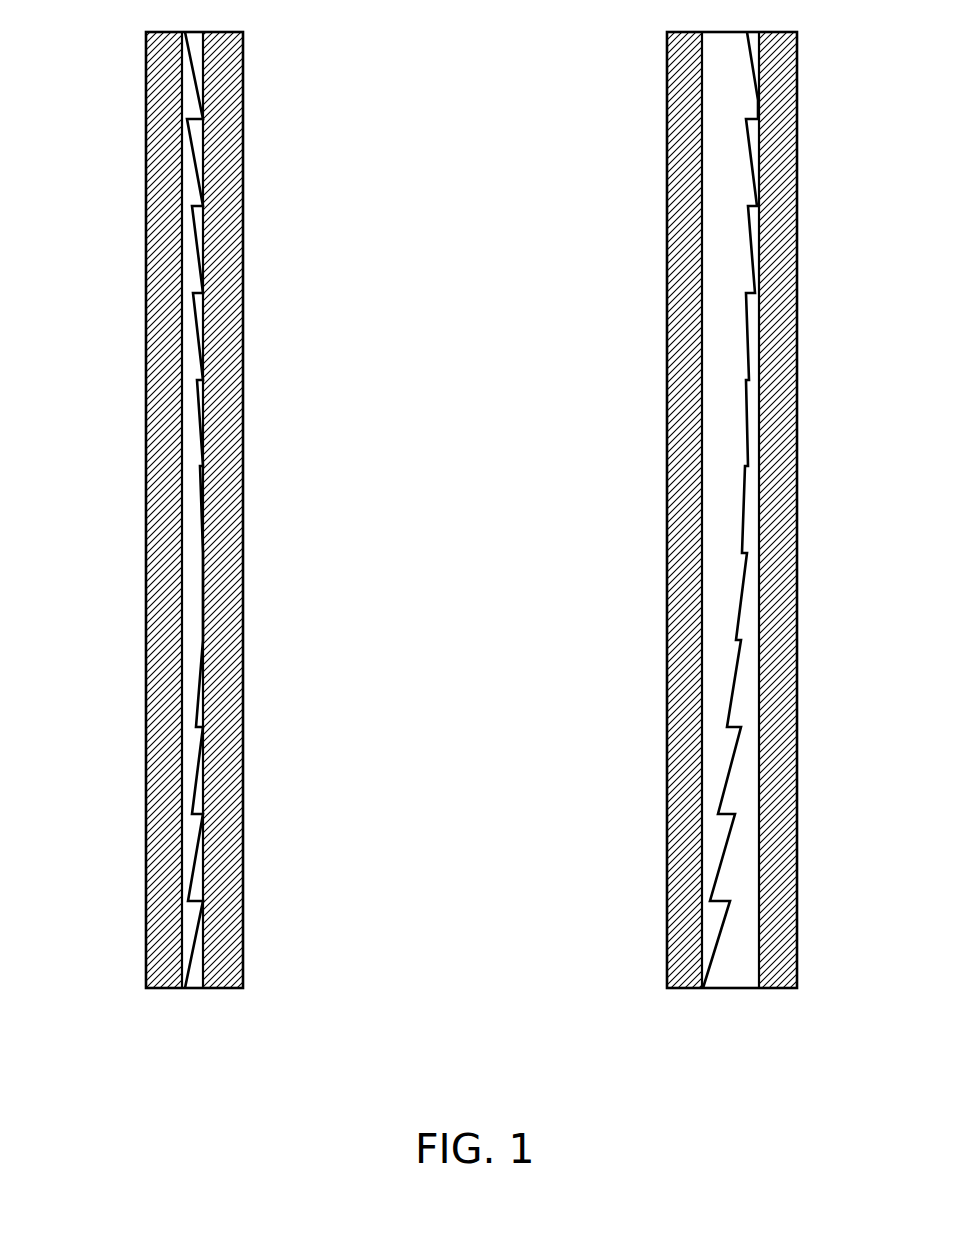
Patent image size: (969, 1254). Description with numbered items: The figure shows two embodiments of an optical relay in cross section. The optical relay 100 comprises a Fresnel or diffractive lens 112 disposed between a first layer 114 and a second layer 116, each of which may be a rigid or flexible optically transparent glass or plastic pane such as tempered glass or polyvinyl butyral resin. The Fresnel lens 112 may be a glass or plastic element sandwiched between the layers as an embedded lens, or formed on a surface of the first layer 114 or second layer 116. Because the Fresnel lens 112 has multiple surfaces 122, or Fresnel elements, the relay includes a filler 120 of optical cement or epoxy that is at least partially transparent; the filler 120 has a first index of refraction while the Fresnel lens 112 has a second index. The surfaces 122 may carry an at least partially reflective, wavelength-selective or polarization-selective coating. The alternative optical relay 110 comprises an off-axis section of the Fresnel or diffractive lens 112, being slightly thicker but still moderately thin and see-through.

The optical relay 100 is at (244, 73).
The alternative optical relay 110 is at (666, 72).
The Fresnel or diffractive lens 112 is at (203, 154).
The first layer 114 is at (243, 265).
The second layer 116 is at (147, 278).
The filler 120 is at (193, 581).
The surfaces 122 is at (202, 433).